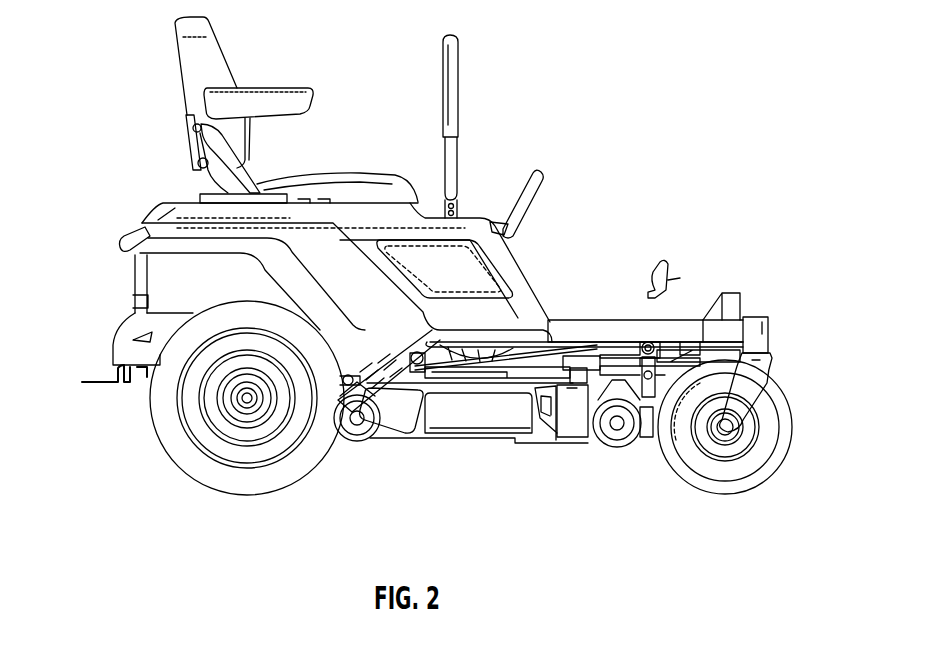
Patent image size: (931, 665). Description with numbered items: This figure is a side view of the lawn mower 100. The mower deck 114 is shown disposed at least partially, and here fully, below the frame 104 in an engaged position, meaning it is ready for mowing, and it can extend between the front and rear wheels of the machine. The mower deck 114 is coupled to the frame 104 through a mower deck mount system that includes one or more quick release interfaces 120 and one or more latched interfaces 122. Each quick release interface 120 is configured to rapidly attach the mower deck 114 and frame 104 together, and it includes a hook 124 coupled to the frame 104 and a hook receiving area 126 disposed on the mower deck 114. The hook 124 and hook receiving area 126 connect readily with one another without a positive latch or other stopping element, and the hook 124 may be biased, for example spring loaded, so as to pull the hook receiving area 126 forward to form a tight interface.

The lawn mower 100 is at (137, 103).
The frame 104 is at (607, 330).
The mower deck 114 is at (569, 444).
The quick release interface 120 is at (624, 388).
The latched interface 122 is at (395, 395).
The hook 124 is at (642, 350).
The hook receiving area 126 is at (593, 372).